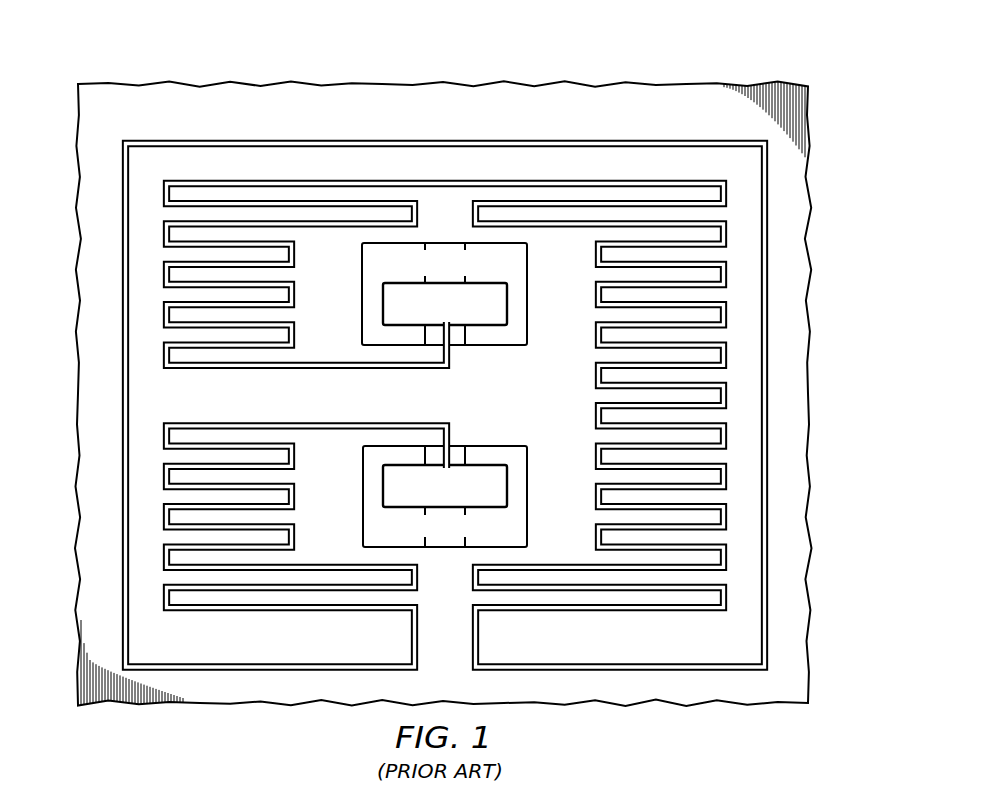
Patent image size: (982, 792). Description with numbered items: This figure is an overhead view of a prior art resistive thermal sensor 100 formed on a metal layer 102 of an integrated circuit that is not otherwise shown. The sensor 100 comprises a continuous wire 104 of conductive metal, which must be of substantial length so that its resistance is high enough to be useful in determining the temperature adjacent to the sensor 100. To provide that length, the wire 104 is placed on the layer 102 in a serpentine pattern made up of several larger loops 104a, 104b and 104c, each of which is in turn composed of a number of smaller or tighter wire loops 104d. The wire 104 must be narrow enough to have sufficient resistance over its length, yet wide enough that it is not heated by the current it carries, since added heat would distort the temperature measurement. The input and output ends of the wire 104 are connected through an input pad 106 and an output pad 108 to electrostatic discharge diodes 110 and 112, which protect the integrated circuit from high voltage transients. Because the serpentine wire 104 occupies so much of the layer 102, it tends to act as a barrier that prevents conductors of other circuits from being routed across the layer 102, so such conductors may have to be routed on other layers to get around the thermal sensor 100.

The thermal sensor 100 is at (245, 66).
The metal layer 102 is at (583, 82).
The wire 104 is at (632, 612).
The larger loop 104a is at (157, 252).
The larger loop 104b is at (157, 534).
The larger loop 104c is at (736, 252).
The smaller wire loop 104d is at (163, 315).
The input pad 106 is at (478, 331).
The output pad 108 is at (497, 430).
The ESD diodes 110 is at (530, 295).
The ESD diodes 112 is at (529, 495).